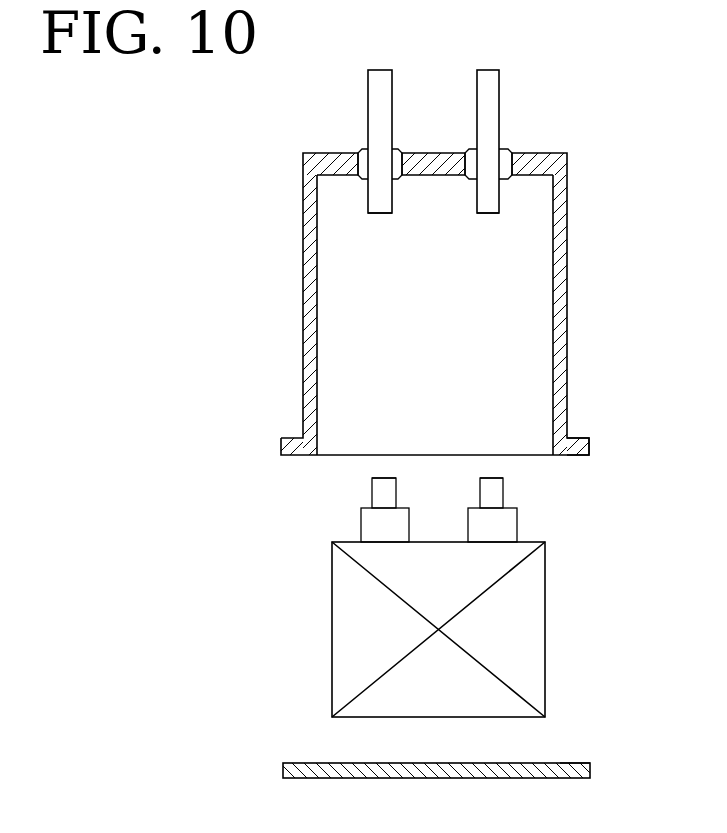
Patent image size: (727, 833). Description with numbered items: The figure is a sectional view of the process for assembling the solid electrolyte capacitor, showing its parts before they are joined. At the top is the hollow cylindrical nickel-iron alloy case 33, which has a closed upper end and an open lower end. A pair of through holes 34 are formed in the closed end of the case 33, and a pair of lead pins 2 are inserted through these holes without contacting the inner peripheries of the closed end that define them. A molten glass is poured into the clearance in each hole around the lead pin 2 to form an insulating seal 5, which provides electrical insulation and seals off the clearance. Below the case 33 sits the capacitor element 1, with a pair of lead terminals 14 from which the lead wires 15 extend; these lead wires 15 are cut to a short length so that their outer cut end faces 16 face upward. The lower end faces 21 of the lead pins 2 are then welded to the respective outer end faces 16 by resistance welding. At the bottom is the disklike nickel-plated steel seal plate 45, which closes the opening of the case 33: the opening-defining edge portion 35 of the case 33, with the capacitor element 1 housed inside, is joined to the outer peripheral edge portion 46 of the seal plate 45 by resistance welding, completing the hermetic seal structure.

The capacitor element 1 is at (540, 660).
The lead pin 2 is at (372, 125).
The insulating seal 5 is at (398, 150).
The lead terminal 14 is at (365, 535).
The lead wire 15 is at (378, 493).
The outer end face 16 is at (378, 472).
The lower end face 21 is at (383, 216).
The case 33 is at (567, 295).
The through hole 34 is at (360, 150).
The opening-defining edge portion 35 is at (577, 457).
The seal plate 45 is at (305, 762).
The outer peripheral edge portion 46 is at (572, 762).